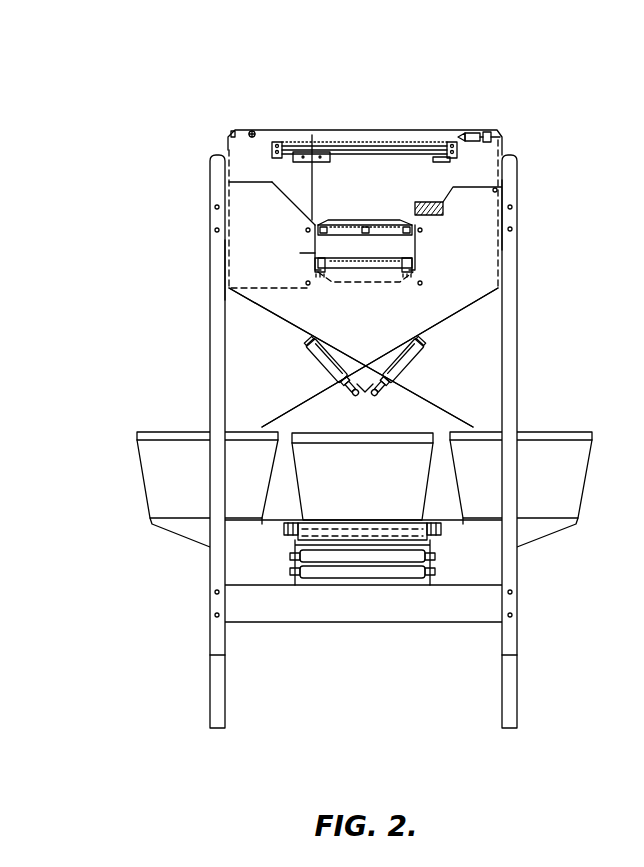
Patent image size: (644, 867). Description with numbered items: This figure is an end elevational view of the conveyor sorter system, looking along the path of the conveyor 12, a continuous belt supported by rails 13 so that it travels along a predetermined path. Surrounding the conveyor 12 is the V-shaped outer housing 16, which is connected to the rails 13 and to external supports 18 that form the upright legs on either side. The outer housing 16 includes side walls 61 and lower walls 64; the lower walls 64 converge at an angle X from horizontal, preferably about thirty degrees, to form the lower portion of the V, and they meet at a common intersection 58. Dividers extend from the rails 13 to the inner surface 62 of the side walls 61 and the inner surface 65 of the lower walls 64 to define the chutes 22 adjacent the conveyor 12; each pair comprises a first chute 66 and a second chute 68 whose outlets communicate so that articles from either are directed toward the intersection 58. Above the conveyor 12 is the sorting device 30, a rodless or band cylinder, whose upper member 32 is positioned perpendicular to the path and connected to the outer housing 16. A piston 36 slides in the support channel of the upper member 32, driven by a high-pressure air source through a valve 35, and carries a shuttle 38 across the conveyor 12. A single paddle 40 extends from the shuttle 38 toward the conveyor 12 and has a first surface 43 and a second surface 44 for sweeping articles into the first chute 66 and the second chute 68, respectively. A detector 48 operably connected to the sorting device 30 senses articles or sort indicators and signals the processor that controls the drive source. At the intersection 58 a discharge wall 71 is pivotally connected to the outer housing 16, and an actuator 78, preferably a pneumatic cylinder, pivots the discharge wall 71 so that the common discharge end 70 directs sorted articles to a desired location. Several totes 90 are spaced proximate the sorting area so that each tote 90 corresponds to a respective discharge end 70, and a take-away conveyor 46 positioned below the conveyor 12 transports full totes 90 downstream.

The conveyor 12 is at (395, 225).
The rails 13 is at (307, 254).
The outer housing 16 is at (210, 187).
The external supports 18 is at (211, 268).
The chutes 22 is at (257, 204).
The sorting device 30 is at (375, 128).
The upper member 32 is at (293, 130).
The valve 35 is at (270, 151).
The piston 36 is at (378, 153).
The shuttle 38 is at (307, 152).
The paddle 40 is at (314, 181).
The first surface 43 is at (314, 197).
The second surface 44 is at (316, 210).
The take-away conveyor 46 is at (363, 545).
The detector 48 is at (420, 202).
The intersection 58 is at (365, 368).
The side walls 61 is at (503, 268).
The inner surface of the side walls 62 is at (500, 173).
The lower walls 64 is at (254, 311).
The inner surface of the lower walls 65 is at (242, 297).
The first chute 66 is at (480, 232).
The second chute 68 is at (247, 250).
The common discharge end 70 is at (445, 382).
The discharge wall 71 is at (409, 382).
The actuator 78 is at (319, 362).
The tote 90 is at (150, 460).
The angle X is at (240, 292).